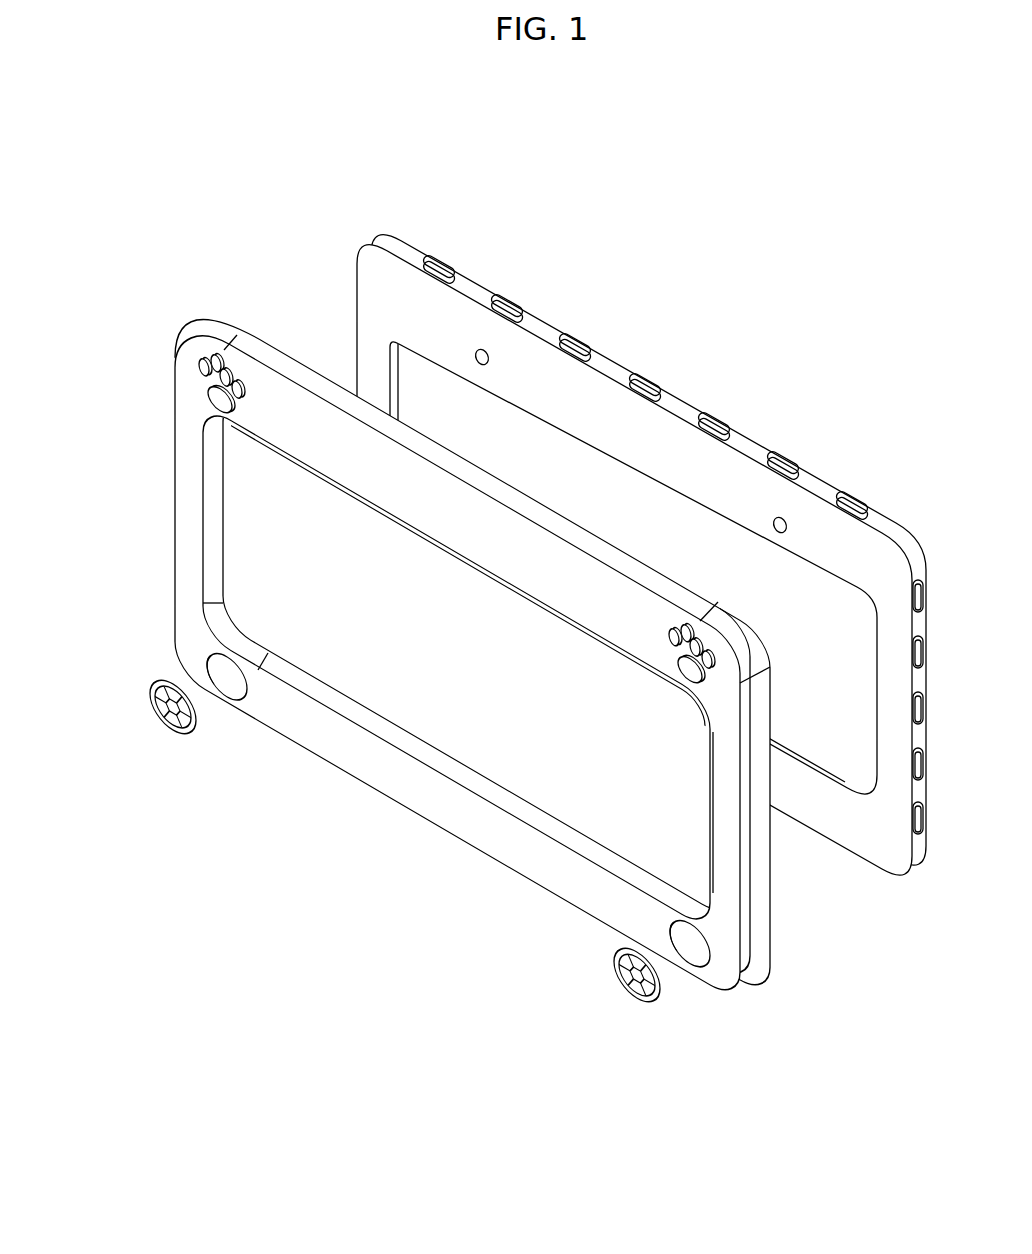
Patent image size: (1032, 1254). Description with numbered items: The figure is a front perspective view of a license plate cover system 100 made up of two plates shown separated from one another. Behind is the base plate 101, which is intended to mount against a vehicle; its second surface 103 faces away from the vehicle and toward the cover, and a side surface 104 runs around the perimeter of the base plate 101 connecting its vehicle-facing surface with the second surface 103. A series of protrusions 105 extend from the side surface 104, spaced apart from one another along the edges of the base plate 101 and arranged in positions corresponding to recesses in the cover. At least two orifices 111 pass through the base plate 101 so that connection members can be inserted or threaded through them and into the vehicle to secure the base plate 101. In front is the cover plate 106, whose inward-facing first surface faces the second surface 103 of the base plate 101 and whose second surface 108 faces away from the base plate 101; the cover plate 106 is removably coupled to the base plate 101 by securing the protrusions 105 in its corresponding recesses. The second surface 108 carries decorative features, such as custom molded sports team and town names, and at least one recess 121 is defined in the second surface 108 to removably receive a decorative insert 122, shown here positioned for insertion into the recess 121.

The license plate cover system 100 is at (158, 86).
The base plate 101 is at (336, 239).
The second surface 103 is at (840, 800).
The side surface 104 is at (812, 482).
The protrusions 105 is at (578, 340).
The cover plate 106 is at (156, 321).
The second surface 108 is at (332, 745).
The orifices 111 is at (491, 376).
The recess 121 is at (230, 680).
The decorative insert 122 is at (150, 719).